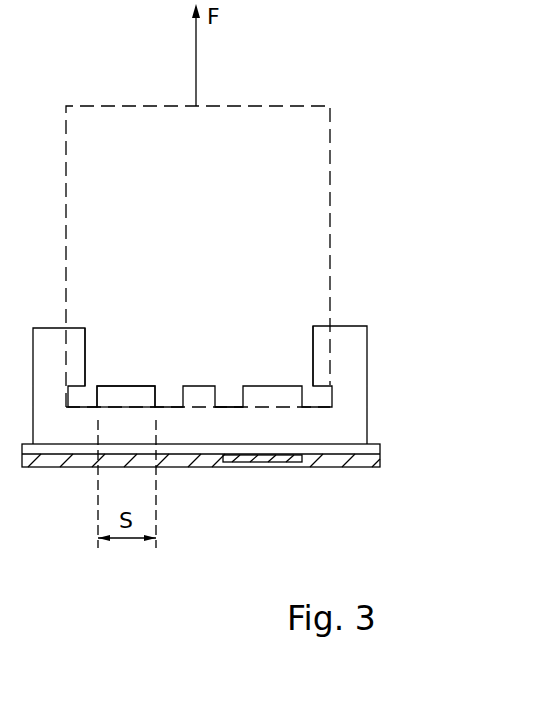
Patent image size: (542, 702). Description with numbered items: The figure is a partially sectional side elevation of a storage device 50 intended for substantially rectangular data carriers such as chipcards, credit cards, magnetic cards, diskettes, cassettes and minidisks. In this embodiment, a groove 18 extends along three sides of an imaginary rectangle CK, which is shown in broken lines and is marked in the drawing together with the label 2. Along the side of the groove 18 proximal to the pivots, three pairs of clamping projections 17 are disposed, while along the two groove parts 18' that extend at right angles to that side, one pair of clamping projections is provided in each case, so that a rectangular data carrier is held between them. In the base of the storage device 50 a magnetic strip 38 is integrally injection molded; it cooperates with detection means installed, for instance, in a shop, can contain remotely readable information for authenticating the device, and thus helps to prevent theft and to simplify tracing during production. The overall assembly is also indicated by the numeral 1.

The semiconductor device / workpiece 1 is at (187, 446).
The chuck (CK) 2 is at (238, 183).
The clamping projections 17 is at (75, 368).
The groove 18 is at (229, 333).
The groove parts 18' is at (199, 322).
The magnetic strip 38 is at (260, 467).
The storage device 50 is at (392, 486).